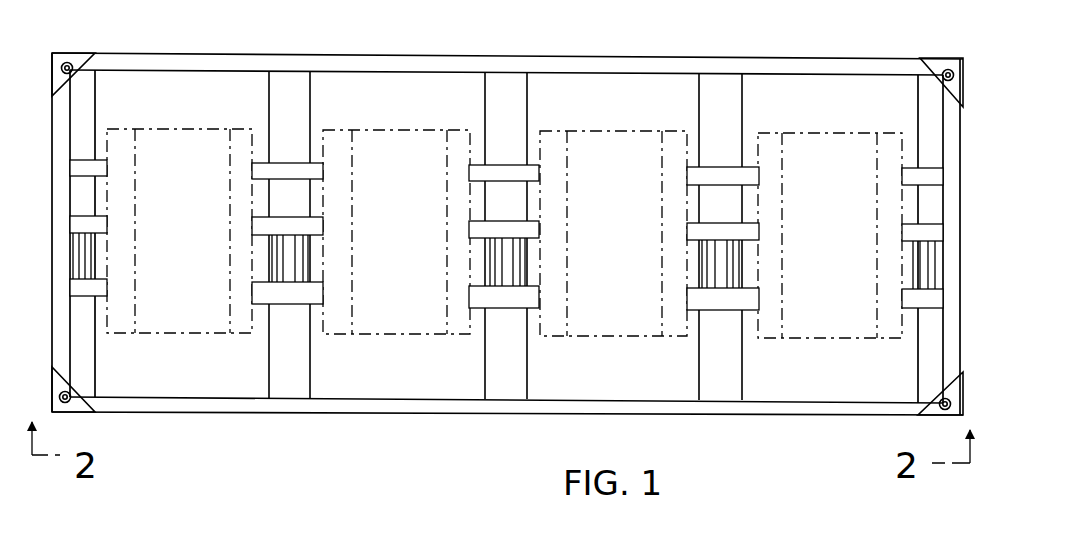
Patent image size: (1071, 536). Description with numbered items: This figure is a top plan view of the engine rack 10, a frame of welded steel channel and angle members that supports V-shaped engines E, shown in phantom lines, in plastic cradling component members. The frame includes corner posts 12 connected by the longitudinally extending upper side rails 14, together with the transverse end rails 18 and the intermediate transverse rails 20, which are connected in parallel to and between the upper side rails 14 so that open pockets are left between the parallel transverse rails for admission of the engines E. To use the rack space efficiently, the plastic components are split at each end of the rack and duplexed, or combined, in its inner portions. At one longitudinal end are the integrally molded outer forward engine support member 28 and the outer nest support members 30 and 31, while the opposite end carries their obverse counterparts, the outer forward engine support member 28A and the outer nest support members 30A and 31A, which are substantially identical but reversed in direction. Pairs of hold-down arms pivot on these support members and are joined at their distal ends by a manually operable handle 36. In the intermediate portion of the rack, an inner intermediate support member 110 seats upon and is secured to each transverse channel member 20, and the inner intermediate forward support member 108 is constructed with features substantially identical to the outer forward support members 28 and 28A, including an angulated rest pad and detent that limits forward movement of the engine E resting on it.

The engine rack 10 is at (595, 413).
The corner posts 12 is at (80, 52).
The upper side rails 14 is at (438, 58).
The transverse end rails 18 is at (66, 189).
The intermediate transverse rails 20 is at (92, 353).
The outer forward engine support member 28 is at (901, 299).
The outer forward engine support member 28A is at (103, 289).
The outer nest support member 30 is at (929, 222).
The outer nest support member 30A is at (101, 216).
The outer nest support member 31 is at (910, 166).
The outer nest support member 31A is at (88, 158).
The manually operable handle 36 is at (88, 253).
The inner intermediate forward support member 108 is at (300, 296).
The inner intermediate support member 110 is at (288, 161).
The V-shaped engine E is at (180, 128).